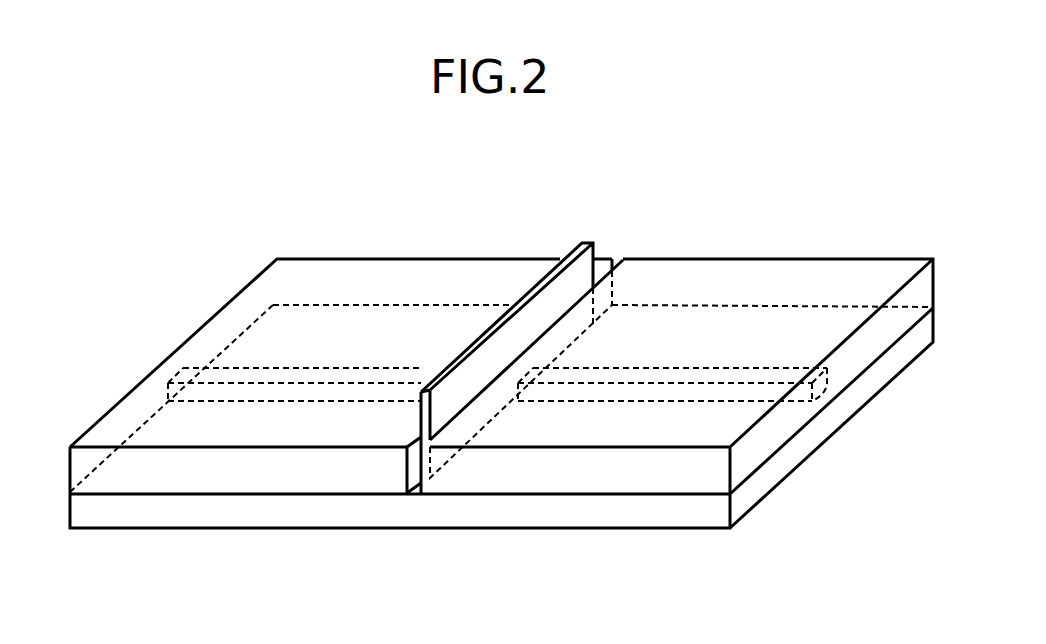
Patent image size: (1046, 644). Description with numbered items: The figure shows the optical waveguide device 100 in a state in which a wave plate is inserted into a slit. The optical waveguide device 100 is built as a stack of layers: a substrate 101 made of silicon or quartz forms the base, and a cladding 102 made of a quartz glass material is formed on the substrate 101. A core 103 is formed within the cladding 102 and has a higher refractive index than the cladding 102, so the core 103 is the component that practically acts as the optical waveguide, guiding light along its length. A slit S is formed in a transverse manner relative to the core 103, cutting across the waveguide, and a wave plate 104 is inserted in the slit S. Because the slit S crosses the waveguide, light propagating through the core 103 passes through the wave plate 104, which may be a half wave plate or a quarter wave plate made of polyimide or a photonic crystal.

The optical waveguide device 100 is at (362, 187).
The substrate 101 is at (193, 515).
The cladding 102 is at (132, 417).
The core 103 is at (237, 377).
The wave plate 104 is at (571, 248).
The slit S is at (630, 247).